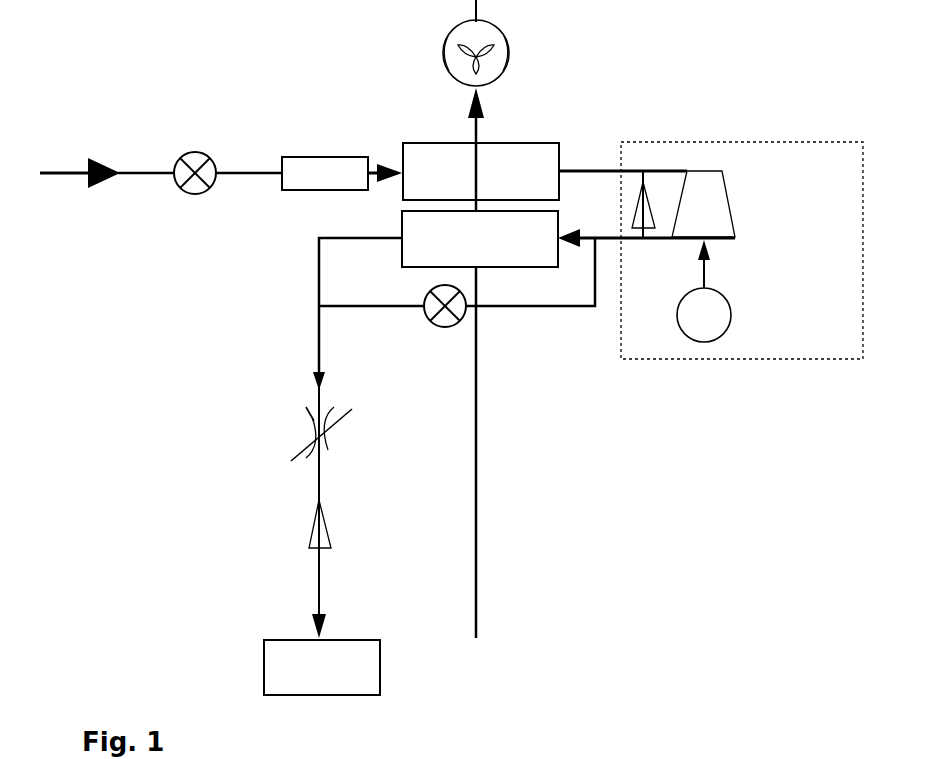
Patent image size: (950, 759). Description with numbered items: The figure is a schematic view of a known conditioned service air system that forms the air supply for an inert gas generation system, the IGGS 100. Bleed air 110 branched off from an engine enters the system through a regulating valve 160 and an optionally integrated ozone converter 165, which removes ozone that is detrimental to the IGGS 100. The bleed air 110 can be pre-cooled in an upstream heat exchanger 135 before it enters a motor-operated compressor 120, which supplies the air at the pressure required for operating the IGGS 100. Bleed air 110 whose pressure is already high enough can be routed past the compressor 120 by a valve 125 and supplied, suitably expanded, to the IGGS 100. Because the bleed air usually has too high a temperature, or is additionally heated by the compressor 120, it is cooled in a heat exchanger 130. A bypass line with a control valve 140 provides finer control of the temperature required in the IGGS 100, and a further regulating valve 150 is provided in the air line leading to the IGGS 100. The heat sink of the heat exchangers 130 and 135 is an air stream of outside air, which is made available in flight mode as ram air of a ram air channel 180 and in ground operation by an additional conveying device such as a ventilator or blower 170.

The IGGS 100 is at (322, 654).
The bleed air 110 is at (97, 166).
The compressor 120 is at (710, 239).
The valve 125 is at (644, 218).
The heat exchanger 130 is at (457, 288).
The upstream heat exchanger 135 is at (545, 171).
The control valve 140 is at (444, 321).
The regulating valve 150 is at (334, 494).
The regulating valve 160 is at (228, 161).
The ozone converter 165 is at (342, 159).
The ventilator or blower 170 is at (487, 100).
The ram air channel 180 is at (506, 459).